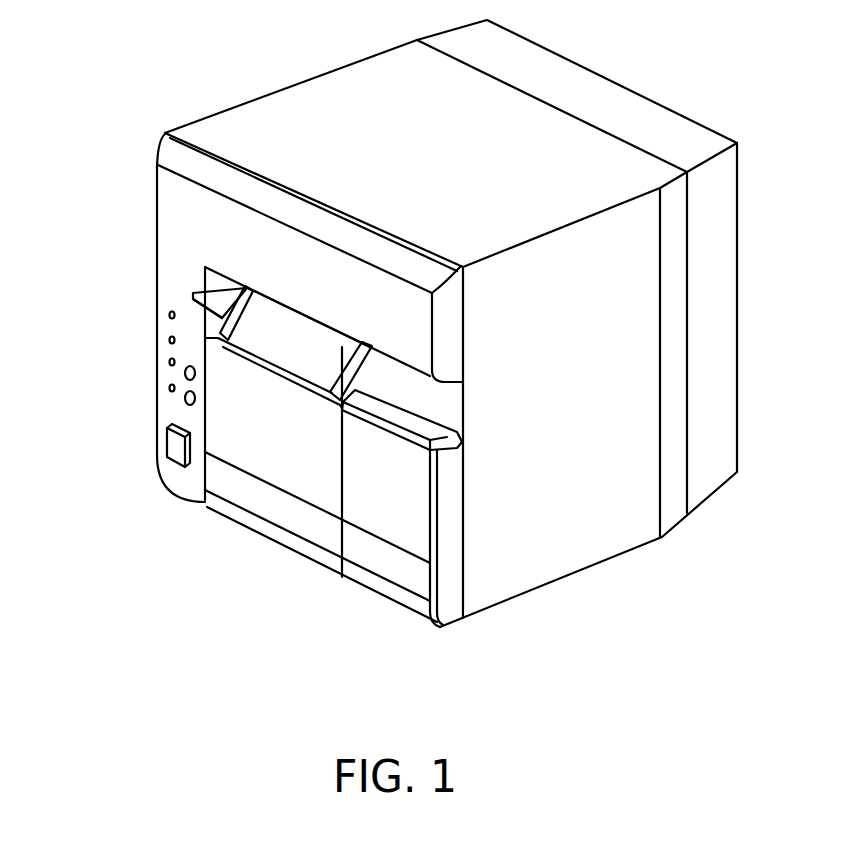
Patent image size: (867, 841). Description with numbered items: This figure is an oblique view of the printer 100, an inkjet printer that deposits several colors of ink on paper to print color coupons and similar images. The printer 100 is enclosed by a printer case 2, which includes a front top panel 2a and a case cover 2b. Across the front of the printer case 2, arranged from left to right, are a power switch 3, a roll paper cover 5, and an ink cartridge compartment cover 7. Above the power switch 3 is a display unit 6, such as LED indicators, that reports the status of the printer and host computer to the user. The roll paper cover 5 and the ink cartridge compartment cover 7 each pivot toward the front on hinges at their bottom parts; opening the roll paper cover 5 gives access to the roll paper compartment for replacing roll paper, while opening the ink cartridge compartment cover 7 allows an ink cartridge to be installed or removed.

The printer 100 is at (137, 224).
The printer case 2 is at (213, 24).
The front top panel 2a is at (173, 185).
The case cover 2b is at (238, 114).
The power switch 3 is at (172, 447).
The roll paper cover 5 is at (280, 470).
The display unit 6 is at (158, 310).
The ink cartridge compartment cover 7 is at (397, 528).